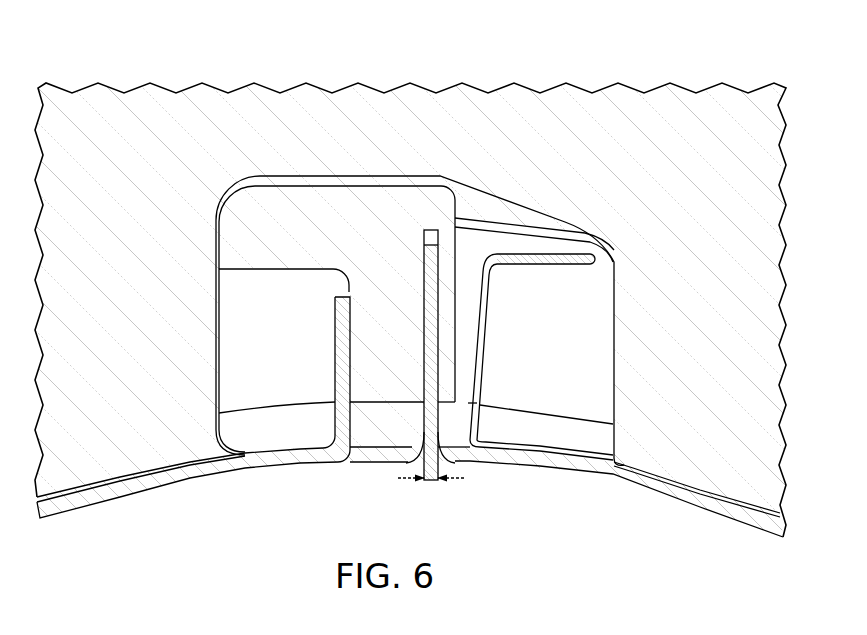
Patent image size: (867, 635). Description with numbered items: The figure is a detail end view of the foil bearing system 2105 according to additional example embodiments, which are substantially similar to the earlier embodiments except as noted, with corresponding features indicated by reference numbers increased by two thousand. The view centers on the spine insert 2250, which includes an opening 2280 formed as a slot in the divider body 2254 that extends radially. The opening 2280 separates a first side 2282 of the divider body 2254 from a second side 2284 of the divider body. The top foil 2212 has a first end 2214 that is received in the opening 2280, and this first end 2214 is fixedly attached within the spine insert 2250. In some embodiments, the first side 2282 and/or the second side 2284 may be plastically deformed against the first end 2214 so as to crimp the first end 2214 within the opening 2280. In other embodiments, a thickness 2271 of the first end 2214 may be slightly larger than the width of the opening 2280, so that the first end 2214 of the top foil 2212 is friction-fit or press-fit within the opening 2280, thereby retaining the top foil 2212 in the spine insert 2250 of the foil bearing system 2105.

The foil bearing system 2105 is at (412, 281).
The top foil 2212 is at (412, 468).
The spine insert 2250 is at (420, 294).
The divider body 2254 is at (372, 325).
The opening 2280 is at (424, 265).
The first end 2214 is at (440, 334).
The second side 2284 is at (398, 392).
The first side 2282 is at (445, 382).
The thickness 2271 is at (403, 481).